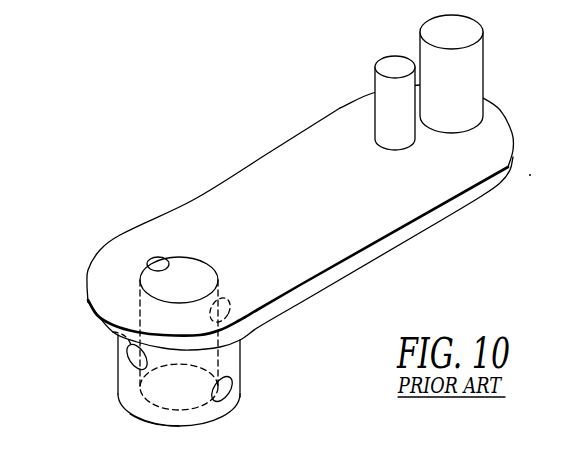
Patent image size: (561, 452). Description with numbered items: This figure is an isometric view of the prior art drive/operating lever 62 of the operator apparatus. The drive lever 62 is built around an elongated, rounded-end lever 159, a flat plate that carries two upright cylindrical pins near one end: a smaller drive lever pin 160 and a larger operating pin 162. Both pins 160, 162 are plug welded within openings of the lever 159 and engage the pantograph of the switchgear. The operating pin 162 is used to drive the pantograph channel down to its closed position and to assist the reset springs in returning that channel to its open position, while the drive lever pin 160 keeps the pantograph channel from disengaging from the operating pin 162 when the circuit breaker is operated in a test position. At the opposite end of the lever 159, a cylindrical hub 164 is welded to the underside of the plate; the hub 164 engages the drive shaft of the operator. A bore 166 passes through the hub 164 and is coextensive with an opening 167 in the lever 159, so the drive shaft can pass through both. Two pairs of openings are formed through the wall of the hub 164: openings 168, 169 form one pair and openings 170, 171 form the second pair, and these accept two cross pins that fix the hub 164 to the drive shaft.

The drive/operating lever 62 is at (240, 145).
The lever 159 is at (202, 207).
The drive lever pin 160 is at (382, 62).
The operating pin 162 is at (472, 27).
The hub 164 is at (237, 363).
The bore 166 is at (137, 411).
The opening 167 is at (165, 258).
The opening 168 is at (231, 308).
The opening 169 is at (129, 363).
The opening 170 is at (222, 402).
The opening 171 is at (113, 332).